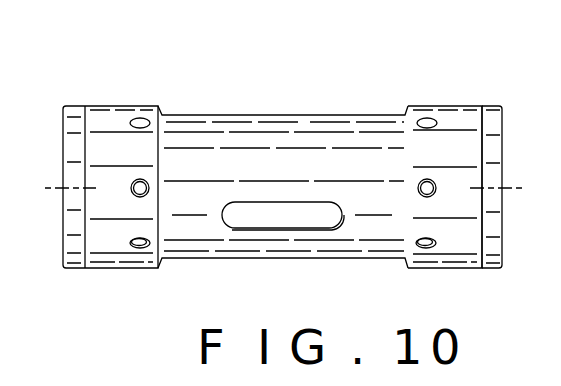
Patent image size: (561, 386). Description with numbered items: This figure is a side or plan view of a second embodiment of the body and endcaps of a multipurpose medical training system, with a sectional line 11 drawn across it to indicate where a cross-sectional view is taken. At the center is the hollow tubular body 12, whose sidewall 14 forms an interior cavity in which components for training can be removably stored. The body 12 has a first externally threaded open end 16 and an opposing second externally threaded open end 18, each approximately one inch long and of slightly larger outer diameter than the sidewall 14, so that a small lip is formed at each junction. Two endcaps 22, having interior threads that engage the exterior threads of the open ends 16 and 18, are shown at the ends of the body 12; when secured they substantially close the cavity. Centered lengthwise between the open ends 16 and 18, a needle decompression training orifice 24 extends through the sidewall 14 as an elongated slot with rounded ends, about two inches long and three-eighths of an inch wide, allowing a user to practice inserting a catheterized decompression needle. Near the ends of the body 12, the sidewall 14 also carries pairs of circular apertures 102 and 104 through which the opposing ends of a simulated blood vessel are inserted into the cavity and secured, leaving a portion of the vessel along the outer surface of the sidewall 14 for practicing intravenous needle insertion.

The sectional line 11 is at (45, 188).
The hollow tubular body 12 is at (382, 100).
The sidewall 14 is at (303, 142).
The first externally threaded open end 16 is at (462, 278).
The second externally threaded open end 18 is at (59, 252).
The endcap 22 is at (74, 118).
The needle decompression training orifice 24 is at (262, 214).
The aperture 102 is at (434, 243).
The aperture 104 is at (132, 243).